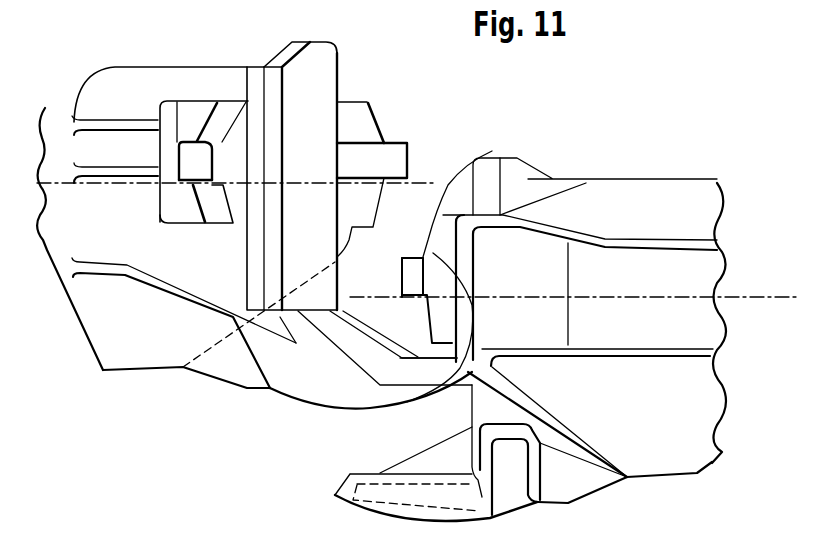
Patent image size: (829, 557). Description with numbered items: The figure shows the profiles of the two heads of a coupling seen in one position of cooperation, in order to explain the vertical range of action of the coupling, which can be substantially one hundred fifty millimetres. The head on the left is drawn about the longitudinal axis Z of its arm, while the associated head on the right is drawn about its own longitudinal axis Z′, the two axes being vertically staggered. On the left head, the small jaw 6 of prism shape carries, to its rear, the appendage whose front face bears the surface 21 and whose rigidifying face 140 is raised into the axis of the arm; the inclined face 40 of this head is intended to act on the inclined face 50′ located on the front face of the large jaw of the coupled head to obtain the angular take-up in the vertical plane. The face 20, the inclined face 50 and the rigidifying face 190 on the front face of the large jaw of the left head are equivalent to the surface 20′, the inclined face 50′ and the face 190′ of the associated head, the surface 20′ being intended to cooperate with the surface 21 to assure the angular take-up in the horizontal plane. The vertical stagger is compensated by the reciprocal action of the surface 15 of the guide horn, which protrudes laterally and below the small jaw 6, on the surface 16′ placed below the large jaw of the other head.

The longitudinal axis Z is at (58, 183).
The surface 21 is at (177, 120).
The face 140 is at (193, 157).
The inclined face 40 is at (218, 119).
The small jaw 6 is at (313, 153).
The inclined face 50 is at (362, 111).
The face 190 is at (368, 140).
The face 20 is at (390, 158).
The inclined face 50′ is at (570, 195).
The face 190′ is at (412, 256).
The surface 16′ is at (433, 253).
The surface 20′ is at (402, 279).
The longitudinal axis Z′ is at (643, 297).
The surface 15 is at (462, 371).